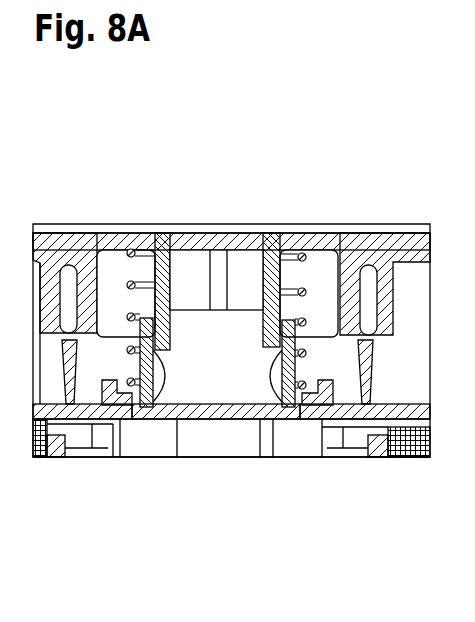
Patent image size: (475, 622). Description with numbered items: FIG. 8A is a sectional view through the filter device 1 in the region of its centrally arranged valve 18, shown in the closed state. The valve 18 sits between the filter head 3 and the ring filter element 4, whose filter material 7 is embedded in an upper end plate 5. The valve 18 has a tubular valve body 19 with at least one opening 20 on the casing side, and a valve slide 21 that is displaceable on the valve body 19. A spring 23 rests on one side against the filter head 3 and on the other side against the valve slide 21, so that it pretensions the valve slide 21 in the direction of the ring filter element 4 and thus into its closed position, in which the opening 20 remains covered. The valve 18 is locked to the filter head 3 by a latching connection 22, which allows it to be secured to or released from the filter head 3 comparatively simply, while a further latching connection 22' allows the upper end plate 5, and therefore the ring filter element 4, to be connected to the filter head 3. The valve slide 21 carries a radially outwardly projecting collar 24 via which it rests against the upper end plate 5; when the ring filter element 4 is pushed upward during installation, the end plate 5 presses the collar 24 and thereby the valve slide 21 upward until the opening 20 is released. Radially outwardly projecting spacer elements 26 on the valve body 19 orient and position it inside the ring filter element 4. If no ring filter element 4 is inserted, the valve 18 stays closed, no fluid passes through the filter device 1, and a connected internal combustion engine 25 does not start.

The filter device 1 is at (68, 203).
The filter head 3 is at (92, 242).
The ring filter element 4 is at (70, 478).
The upper end plate 5 is at (43, 412).
The filter material 7 is at (43, 430).
The valve 18 is at (215, 434).
The valve body 19 is at (195, 410).
The opening 20 is at (163, 373).
The valve slide 21 is at (322, 233).
The latching connection 22 is at (253, 250).
The further latching connection 22' is at (395, 278).
The spring 23 is at (132, 246).
The collar 24 is at (311, 414).
The internal combustion engine 25 is at (291, 147).
The spacer elements 26 is at (308, 395).